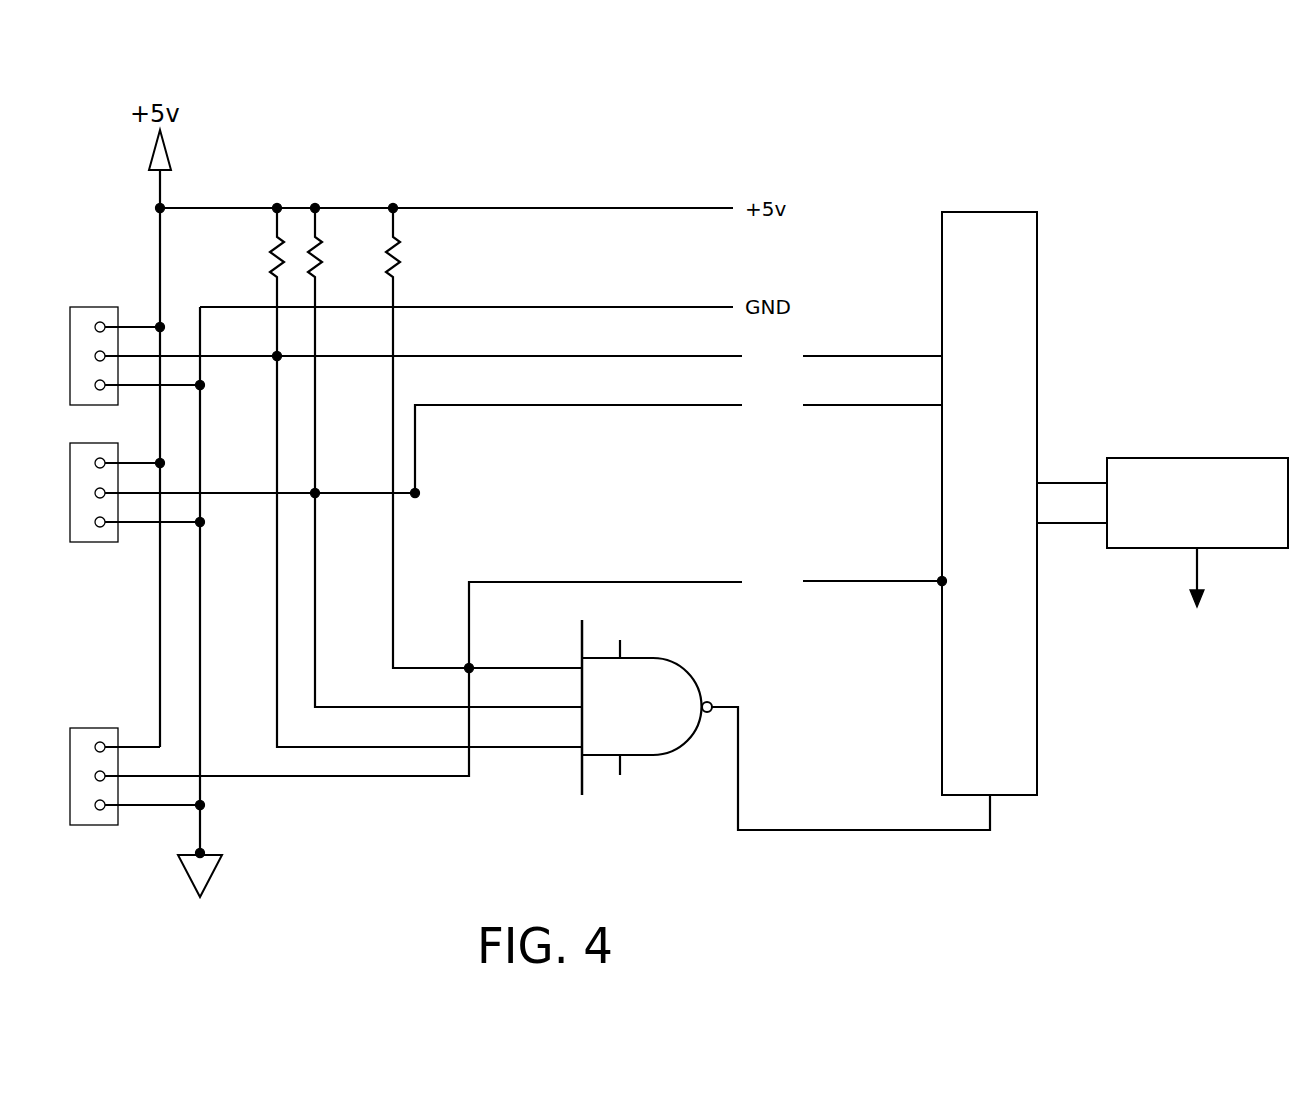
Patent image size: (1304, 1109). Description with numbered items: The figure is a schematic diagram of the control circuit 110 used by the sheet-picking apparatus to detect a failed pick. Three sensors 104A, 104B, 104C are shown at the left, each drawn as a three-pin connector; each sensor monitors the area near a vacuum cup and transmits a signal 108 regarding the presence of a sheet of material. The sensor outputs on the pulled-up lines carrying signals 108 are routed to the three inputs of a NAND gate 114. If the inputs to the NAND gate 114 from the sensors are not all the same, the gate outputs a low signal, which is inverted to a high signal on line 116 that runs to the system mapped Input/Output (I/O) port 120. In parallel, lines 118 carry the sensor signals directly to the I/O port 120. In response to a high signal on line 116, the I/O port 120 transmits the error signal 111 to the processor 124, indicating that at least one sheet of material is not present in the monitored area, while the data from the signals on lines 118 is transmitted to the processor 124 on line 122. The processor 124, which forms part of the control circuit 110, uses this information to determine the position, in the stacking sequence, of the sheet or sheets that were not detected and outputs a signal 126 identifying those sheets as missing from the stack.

The sensor 104A is at (378, 344).
The sensor 104B is at (378, 473).
The sensor 104C is at (110, 764).
The signal 108 is at (277, 411).
The control circuit 110 is at (664, 138).
The error signal 111 is at (1070, 483).
The NAND gate 114 is at (660, 757).
The line 116 is at (848, 830).
The lines 118 is at (610, 307).
The Input/Output (I/O) port 120 is at (988, 212).
The line 122 is at (1070, 523).
The processor 124 is at (1197, 458).
The signal 126 is at (1200, 578).